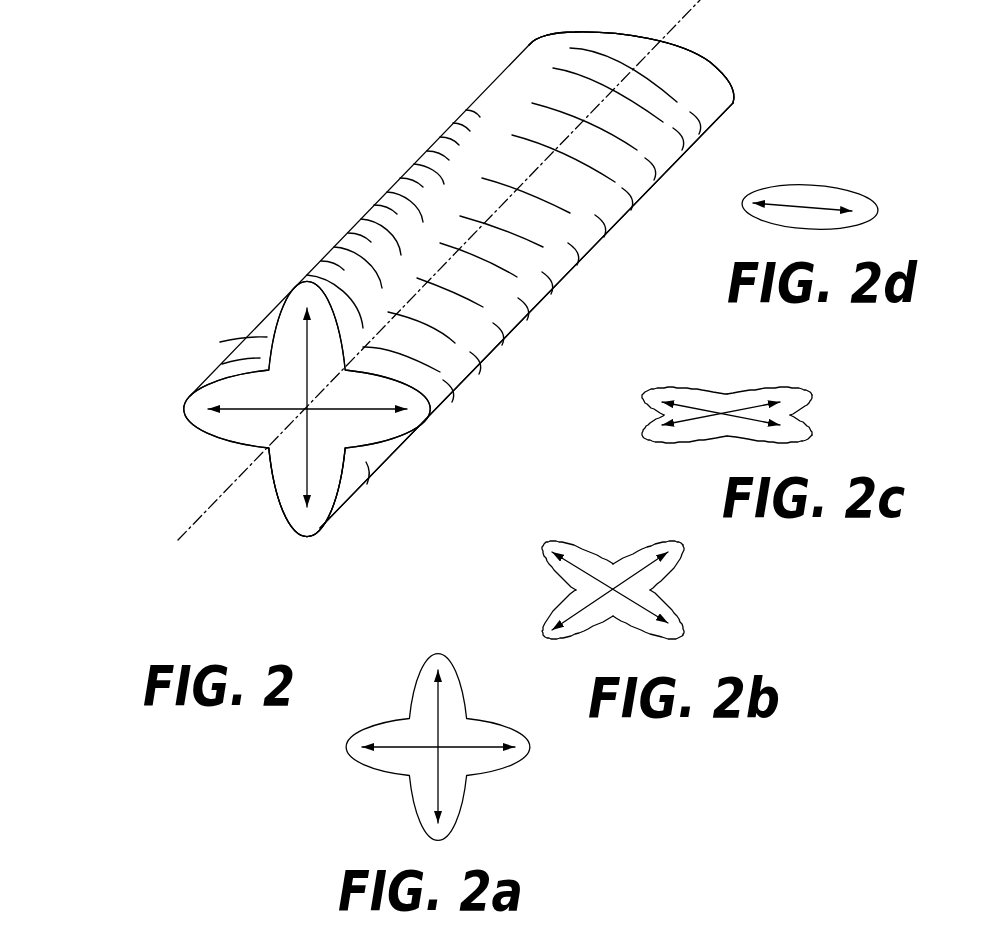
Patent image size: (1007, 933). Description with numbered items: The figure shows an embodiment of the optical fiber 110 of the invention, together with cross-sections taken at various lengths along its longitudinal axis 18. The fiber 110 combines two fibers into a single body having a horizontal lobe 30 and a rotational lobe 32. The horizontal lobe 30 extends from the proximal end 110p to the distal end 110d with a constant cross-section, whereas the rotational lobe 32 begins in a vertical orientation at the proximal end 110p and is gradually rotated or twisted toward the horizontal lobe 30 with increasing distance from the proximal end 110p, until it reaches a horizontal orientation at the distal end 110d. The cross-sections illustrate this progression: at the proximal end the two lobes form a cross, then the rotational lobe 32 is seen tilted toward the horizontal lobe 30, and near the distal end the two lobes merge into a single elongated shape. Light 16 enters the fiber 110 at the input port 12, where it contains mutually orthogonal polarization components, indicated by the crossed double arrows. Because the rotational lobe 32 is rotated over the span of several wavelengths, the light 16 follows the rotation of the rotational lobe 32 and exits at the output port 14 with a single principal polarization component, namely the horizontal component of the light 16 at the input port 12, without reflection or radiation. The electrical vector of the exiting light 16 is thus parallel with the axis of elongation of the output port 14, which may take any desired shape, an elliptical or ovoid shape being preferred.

In FIG. 2, the optical fiber 110 is at (375, 205).
In FIG. 2, the proximal end 110p is at (150, 420).
In FIG. 2, the distal end 110d is at (752, 91).
In FIG. 2, the input port 12 is at (200, 432).
In FIG. 2, the output port 14 is at (716, 67).
In FIG. 2, the light 16 is at (230, 405).
In FIG. 2a, the light 16 is at (481, 743).
In FIG. 2b, the light 16 is at (650, 571).
In FIG. 2c, the light 16 is at (683, 398).
In FIG. 2d, the light 16 is at (797, 203).
In FIG. 2, the axis 18 is at (193, 532).
In FIG. 2, the horizontal lobe 30 is at (474, 371).
In FIG. 2, the rotational lobe 32 is at (286, 518).